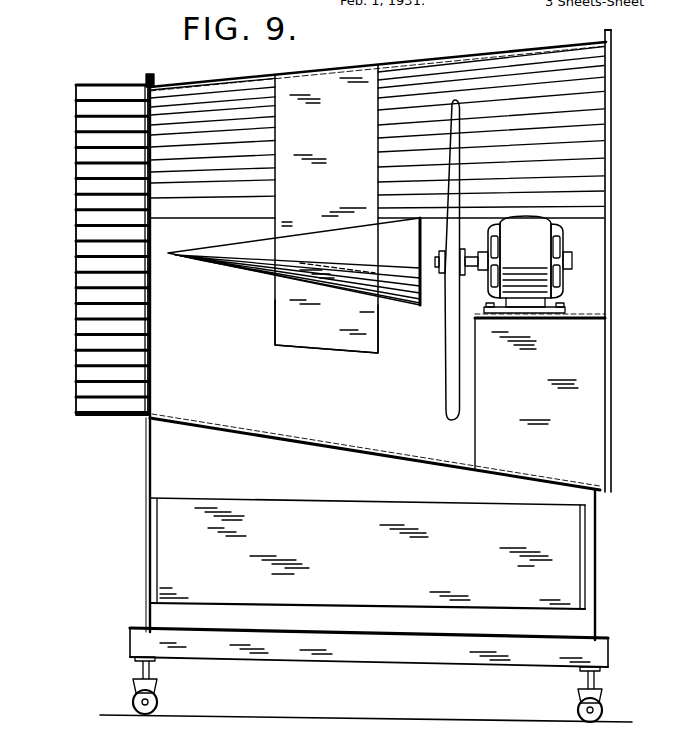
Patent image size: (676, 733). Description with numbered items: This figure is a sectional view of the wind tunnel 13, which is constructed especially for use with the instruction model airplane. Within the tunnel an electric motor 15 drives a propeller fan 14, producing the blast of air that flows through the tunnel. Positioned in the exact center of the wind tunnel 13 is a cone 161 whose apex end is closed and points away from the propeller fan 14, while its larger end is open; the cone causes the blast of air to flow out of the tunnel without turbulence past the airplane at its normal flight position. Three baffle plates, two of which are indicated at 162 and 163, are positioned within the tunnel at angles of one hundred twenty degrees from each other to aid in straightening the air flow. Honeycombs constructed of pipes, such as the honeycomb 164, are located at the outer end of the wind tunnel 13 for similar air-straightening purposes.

The wind tunnel 13 is at (407, 64).
The propeller fan 14 is at (456, 116).
The electric motor 15 is at (560, 242).
The cone 161 is at (246, 259).
The baffle plate 162 is at (276, 117).
The baffle plate 163 is at (317, 345).
The honeycomb 164 is at (82, 108).